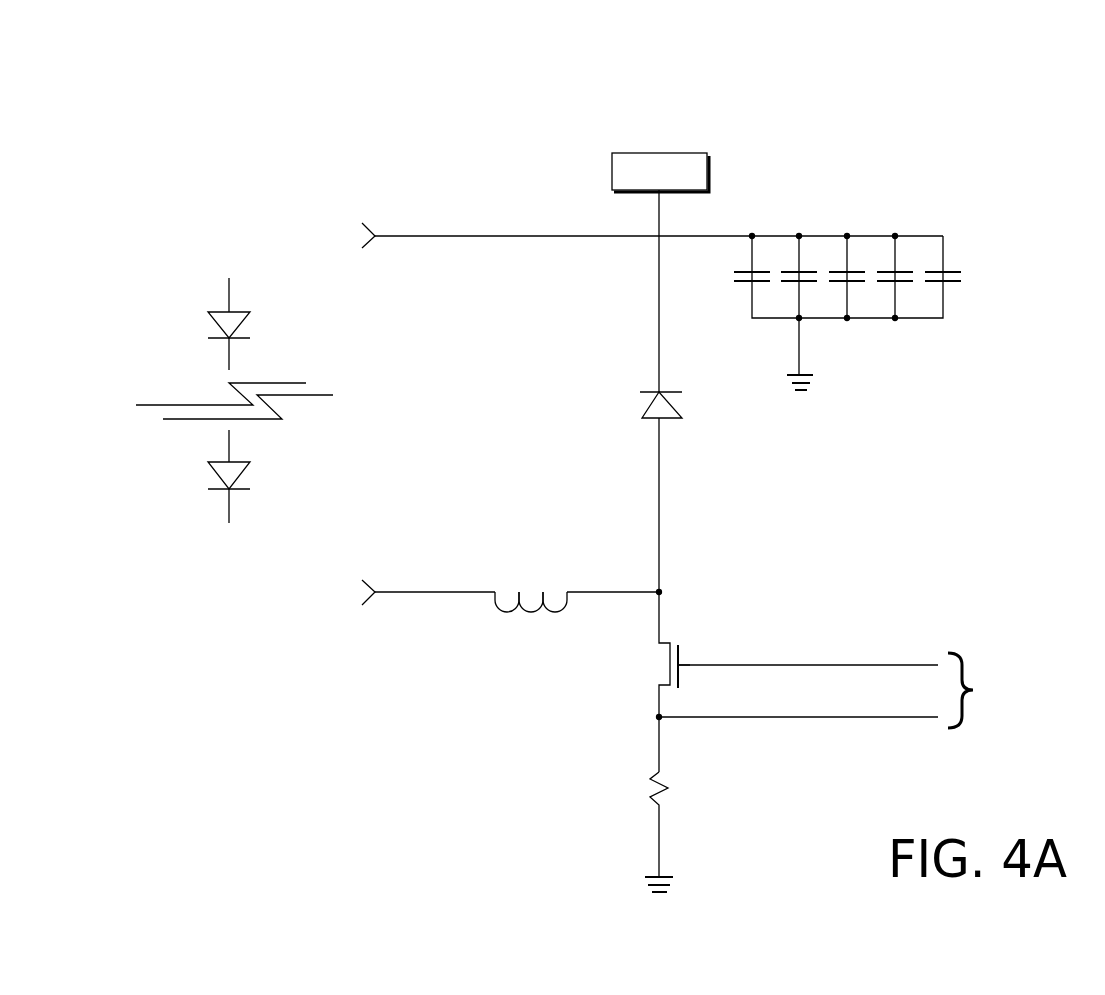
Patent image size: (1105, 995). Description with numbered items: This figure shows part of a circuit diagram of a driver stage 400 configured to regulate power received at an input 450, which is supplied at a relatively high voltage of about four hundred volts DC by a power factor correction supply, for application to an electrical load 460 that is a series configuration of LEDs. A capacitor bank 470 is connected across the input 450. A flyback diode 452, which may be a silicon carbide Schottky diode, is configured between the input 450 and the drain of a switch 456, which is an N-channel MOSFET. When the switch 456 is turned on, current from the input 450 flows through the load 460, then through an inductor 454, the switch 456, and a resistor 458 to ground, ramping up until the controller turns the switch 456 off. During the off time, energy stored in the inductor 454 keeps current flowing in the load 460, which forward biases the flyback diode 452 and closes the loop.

The driver stage 400 is at (346, 70).
The input 450 is at (628, 152).
The flyback diode 452 is at (638, 370).
The inductor 454 is at (530, 618).
The switch 456 is at (626, 720).
The resistor 458 is at (660, 806).
The electrical load 460 is at (403, 672).
The capacitor bank 470 is at (938, 140).